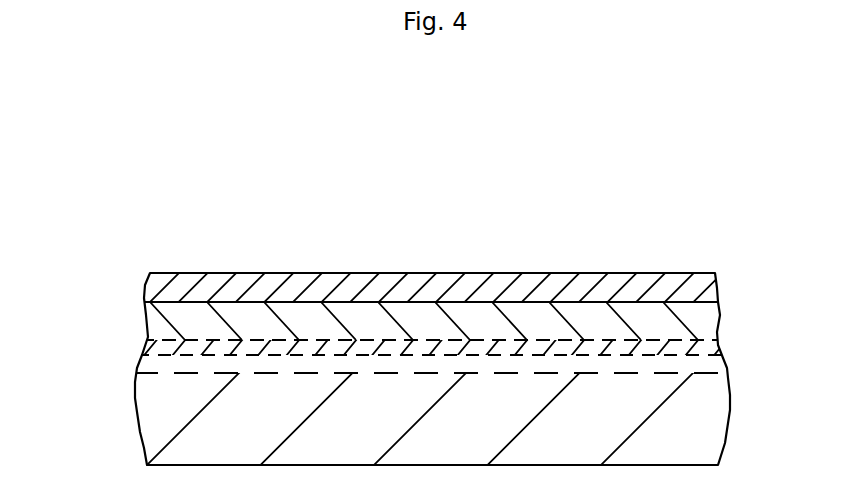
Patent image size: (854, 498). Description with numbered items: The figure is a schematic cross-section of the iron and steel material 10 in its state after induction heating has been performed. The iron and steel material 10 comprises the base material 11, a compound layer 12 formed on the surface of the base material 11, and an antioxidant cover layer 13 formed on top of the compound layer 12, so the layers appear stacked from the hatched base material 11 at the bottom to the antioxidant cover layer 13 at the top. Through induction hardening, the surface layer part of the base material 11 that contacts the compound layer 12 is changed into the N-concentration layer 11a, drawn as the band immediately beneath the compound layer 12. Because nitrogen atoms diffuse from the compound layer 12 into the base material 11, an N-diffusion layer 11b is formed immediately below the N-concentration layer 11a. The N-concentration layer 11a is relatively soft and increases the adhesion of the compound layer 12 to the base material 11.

The iron and steel material 10 is at (399, 212).
The base material 11 is at (728, 410).
The N-concentration layer 11a is at (148, 345).
The N-diffusion layer 11b is at (138, 370).
The compound layer 12 is at (717, 332).
The antioxidant cover layer 13 is at (715, 286).